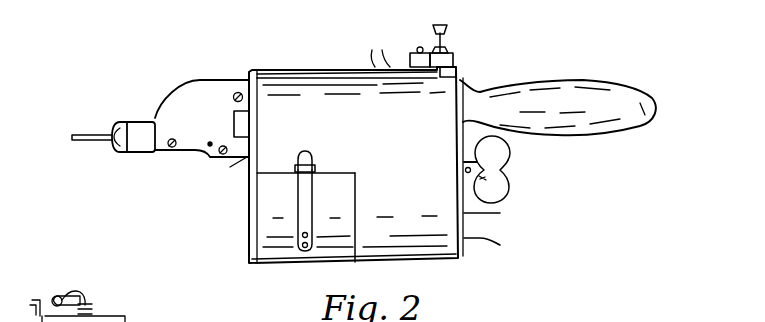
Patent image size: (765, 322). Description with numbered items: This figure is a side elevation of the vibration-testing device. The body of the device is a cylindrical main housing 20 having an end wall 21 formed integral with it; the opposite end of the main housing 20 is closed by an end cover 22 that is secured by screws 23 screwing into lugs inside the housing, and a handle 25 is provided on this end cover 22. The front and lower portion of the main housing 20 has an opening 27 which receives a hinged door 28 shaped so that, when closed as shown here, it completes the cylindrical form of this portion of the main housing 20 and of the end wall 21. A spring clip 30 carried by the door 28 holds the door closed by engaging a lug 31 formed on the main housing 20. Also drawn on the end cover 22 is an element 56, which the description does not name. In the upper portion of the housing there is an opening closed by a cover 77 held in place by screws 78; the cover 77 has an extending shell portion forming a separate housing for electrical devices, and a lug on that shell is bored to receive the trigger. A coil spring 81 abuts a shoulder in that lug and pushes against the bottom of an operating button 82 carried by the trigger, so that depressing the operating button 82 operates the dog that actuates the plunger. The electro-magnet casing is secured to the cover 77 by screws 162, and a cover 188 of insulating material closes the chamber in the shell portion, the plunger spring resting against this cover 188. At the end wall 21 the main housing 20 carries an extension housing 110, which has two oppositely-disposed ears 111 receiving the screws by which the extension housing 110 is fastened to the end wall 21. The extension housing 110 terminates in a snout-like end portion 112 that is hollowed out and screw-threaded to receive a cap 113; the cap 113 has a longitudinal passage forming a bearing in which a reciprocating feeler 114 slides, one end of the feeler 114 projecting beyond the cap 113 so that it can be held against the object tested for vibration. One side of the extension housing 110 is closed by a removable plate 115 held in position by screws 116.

The main housing 20 is at (440, 247).
The end wall 21 is at (232, 171).
The end cover 22 is at (492, 218).
The screws 23 is at (492, 245).
The handle 25 is at (562, 90).
The opening 27 is at (357, 205).
The door 28 is at (270, 212).
The spring clip 30 is at (307, 203).
The lug 31 is at (313, 168).
The cam 56 is at (495, 155).
The cover 77 is at (310, 77).
The screws 78 is at (268, 68).
The coil spring 81 is at (447, 45).
The operating button 82 is at (443, 23).
The extension housing 110 is at (172, 90).
The ears 111 is at (233, 120).
The snout-like end portion 112 is at (137, 122).
The cap 113 is at (112, 127).
The feeler 114 is at (80, 135).
The removable plate 115 is at (187, 92).
The screws 116 is at (238, 93).
The screws 162 is at (373, 52).
The cover 188 is at (400, 65).